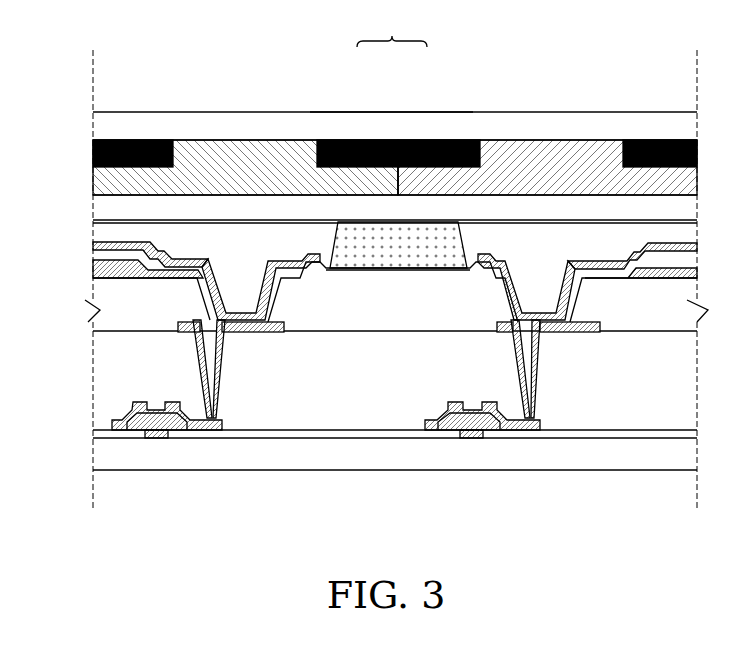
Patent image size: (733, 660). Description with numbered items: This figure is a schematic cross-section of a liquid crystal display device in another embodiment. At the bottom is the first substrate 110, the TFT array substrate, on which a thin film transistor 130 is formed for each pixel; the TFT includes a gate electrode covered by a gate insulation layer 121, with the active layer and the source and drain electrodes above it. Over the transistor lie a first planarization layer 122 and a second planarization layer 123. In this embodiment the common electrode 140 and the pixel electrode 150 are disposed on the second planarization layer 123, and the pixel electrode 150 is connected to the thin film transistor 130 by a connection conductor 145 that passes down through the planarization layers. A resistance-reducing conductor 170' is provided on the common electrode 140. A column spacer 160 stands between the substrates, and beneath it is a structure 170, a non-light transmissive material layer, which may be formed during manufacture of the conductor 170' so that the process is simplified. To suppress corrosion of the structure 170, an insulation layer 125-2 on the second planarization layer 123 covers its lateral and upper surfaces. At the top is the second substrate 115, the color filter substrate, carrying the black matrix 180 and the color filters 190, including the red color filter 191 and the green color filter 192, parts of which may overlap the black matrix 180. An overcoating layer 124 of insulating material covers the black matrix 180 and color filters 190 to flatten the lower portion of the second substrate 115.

The first substrate 110 is at (102, 454).
The second substrate 115 is at (97, 124).
The gate insulation layer 121 is at (100, 433).
The first planarization layer 122 is at (117, 385).
The second planarization layer 123 is at (117, 319).
The overcoating layer 124 is at (97, 208).
The insulation layer 125-2 is at (95, 257).
The thin film transistor 130 is at (159, 446).
The common electrode 140 is at (95, 279).
The connection conductor 145 is at (195, 340).
The pixel electrode 150 is at (95, 246).
The column spacer 160 is at (365, 245).
The structure 170 is at (398, 392).
The resistance-reducing conductor 170' is at (367, 273).
The black matrix 180 is at (93, 152).
The color filters 190 is at (392, 34).
The red color filter 191 is at (310, 112).
The green color filter 192 is at (517, 150).